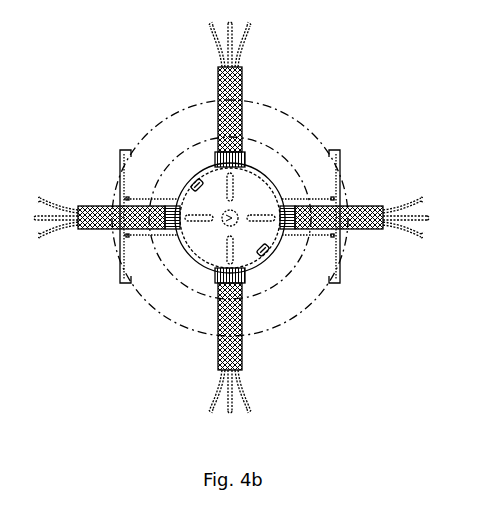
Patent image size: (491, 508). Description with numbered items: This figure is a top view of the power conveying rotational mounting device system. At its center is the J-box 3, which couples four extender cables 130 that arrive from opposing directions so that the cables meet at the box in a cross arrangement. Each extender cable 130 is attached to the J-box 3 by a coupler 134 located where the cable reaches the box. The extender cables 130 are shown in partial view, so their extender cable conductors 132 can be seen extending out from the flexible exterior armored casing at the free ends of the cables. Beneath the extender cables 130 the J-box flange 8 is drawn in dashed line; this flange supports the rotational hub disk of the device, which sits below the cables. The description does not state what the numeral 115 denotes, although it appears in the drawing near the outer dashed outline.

The J-box 3 is at (197, 207).
The J-box flange 8 is at (178, 282).
The outer housing ring 115 is at (282, 302).
The extender cable 130 is at (217, 353).
The extender cable conductor 132 is at (392, 223).
The coupler 134 is at (247, 160).